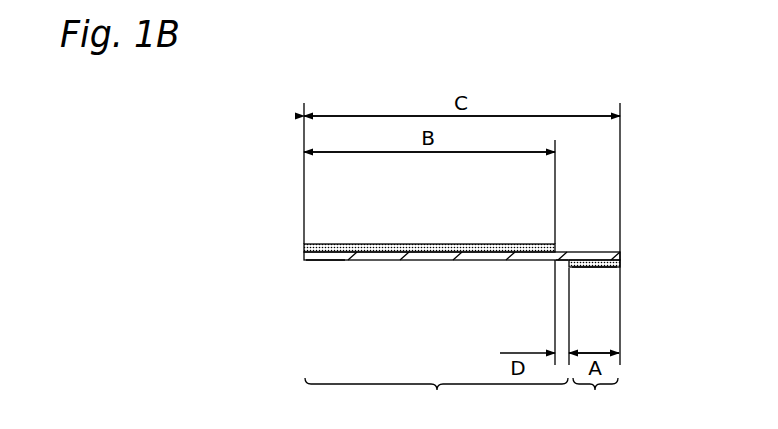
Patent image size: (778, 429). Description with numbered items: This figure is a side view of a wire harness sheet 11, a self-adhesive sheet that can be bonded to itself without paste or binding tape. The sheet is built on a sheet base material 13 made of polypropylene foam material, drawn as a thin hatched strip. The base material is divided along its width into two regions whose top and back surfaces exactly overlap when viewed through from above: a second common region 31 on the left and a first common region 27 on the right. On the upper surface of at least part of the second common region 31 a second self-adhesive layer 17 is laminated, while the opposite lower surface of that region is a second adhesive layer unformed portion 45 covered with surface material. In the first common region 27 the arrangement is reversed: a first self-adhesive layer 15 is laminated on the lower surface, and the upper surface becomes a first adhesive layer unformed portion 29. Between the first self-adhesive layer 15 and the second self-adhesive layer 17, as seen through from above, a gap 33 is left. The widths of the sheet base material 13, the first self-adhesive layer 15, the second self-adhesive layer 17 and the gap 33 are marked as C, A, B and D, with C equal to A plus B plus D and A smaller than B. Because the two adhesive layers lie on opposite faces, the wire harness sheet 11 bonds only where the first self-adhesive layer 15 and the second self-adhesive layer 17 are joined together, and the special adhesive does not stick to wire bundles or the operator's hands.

The wire harness sheet 11 is at (266, 201).
The sheet base material 13 is at (620, 257).
The first self-adhesive layer 15 is at (590, 268).
The second self-adhesive layer 17 is at (370, 244).
The first adhesive layer unformed portion 29 is at (585, 252).
The gap 33 is at (562, 262).
The second adhesive layer unformed portion 45 is at (323, 262).
The second common region 31 is at (436, 398).
The first common region 27 is at (595, 398).